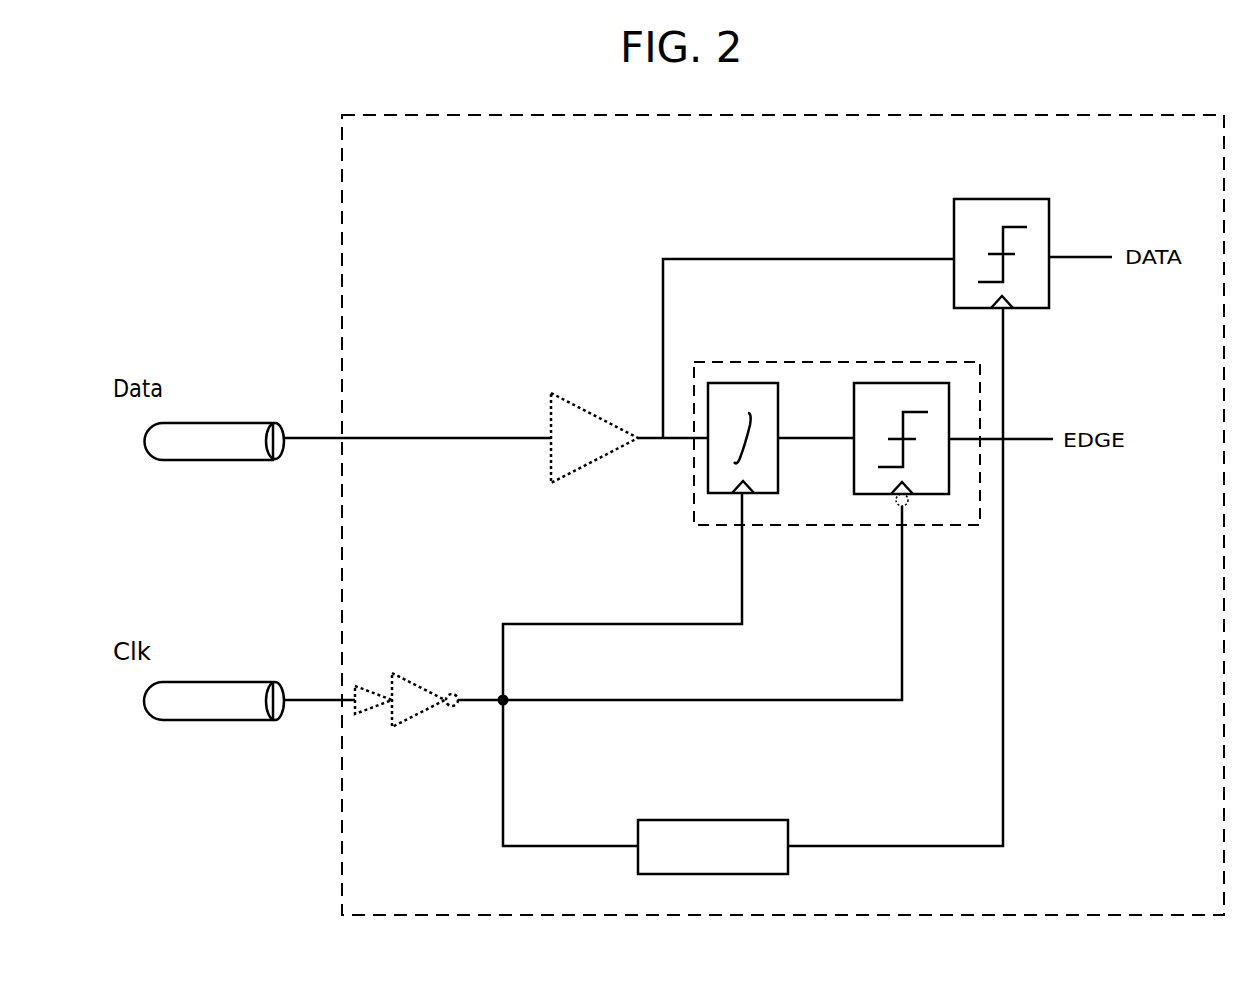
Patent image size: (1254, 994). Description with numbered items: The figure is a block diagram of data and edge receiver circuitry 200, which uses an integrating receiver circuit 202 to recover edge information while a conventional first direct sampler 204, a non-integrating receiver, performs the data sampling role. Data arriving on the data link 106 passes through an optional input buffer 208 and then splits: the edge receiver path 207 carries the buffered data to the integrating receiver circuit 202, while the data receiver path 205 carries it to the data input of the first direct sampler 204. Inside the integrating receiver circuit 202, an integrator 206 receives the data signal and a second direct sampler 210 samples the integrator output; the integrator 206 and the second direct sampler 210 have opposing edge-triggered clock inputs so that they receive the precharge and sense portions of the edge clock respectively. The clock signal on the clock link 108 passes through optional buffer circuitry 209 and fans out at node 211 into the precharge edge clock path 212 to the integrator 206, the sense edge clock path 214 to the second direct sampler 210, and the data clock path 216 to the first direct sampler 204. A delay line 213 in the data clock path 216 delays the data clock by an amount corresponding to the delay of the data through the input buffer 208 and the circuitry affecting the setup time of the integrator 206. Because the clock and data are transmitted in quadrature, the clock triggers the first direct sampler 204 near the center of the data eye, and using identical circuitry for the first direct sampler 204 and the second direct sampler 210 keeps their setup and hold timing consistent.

The data and edge receiver circuitry 200 is at (1166, 212).
The data link 106 is at (286, 430).
The clock link 108 is at (284, 690).
The input buffer 208 is at (549, 405).
The buffer circuitry 209 is at (423, 682).
The data receiver path 205 is at (803, 258).
The edge receiver path 207 is at (680, 445).
The integrating receiver circuit 202 is at (831, 360).
The integrator 206 is at (768, 383).
The second direct sampler 210 is at (949, 407).
The first direct sampler 204 is at (952, 225).
The node 211 is at (506, 699).
The precharge integrating receiver edge clock path 212 is at (627, 623).
The sense integrating receiver edge clock path 214 is at (660, 698).
The data clock path 216 is at (505, 795).
The delay line 213 is at (810, 806).